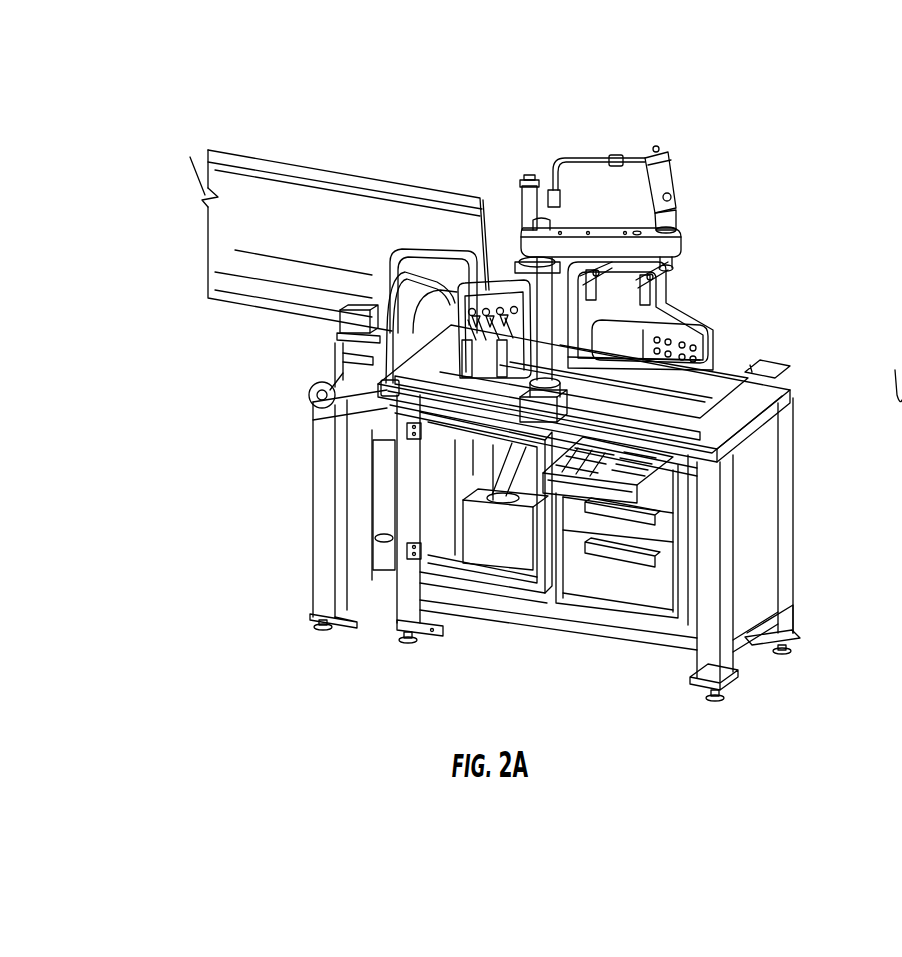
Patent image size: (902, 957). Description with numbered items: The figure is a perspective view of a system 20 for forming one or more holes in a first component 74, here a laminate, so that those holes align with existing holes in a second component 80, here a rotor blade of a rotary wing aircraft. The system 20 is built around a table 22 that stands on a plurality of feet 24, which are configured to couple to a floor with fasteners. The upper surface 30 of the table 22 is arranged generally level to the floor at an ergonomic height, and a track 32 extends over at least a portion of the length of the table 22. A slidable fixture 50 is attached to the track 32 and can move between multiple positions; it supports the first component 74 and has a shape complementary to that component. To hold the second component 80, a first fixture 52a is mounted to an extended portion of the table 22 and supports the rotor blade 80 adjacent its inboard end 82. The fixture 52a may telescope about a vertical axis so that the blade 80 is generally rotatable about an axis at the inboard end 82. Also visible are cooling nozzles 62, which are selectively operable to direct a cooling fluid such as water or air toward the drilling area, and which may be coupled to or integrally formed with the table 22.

The system 20 is at (800, 212).
The table 22 is at (640, 567).
The feet 24 is at (687, 678).
The upper surface 30 is at (787, 418).
The track 32 is at (735, 378).
The slidable fixture 50 is at (720, 324).
The first fixture 52a is at (302, 357).
The cooling nozzles 62 is at (387, 181).
The first component 74 is at (650, 313).
The second component 80 is at (220, 197).
The inboard end 82 is at (520, 237).